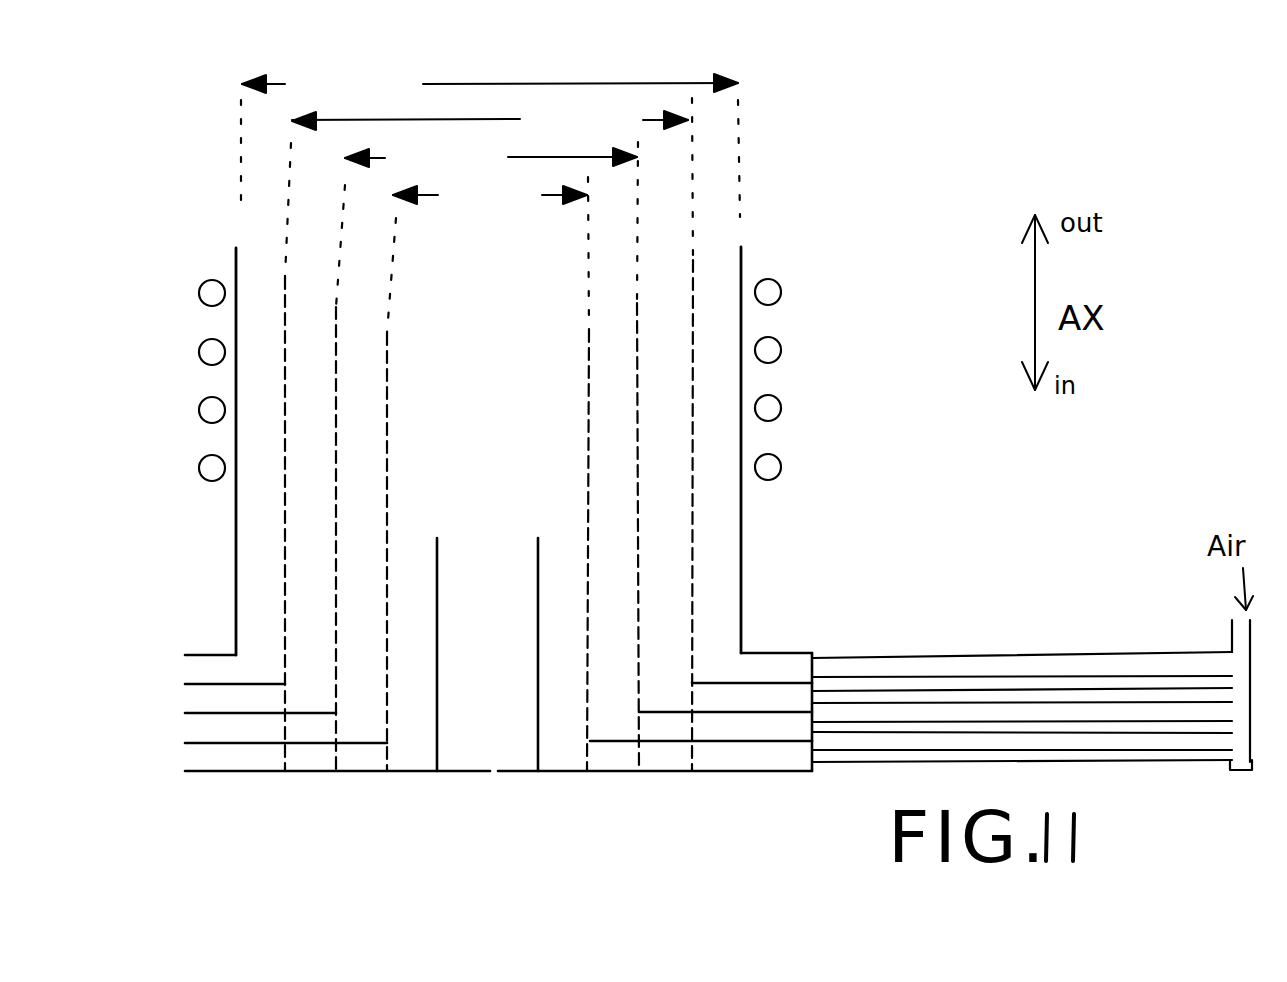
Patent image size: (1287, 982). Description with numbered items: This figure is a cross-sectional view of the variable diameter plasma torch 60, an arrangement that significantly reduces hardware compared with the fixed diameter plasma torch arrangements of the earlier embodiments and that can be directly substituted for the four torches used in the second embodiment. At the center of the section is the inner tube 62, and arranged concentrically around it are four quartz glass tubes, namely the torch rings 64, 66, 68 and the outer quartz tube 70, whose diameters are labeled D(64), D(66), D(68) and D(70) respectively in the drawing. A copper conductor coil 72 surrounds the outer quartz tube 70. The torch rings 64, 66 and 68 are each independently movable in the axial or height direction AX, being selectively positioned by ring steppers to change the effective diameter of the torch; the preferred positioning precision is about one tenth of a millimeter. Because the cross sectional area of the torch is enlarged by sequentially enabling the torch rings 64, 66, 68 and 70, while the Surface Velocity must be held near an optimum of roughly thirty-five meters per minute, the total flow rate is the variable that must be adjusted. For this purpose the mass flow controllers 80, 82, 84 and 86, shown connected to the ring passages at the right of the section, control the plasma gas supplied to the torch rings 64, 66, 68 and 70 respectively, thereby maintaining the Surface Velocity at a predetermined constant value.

The variable diameter plasma torch 60 is at (853, 160).
The inner tube 62 is at (542, 637).
The quartz glass tube 64 is at (592, 567).
The quartz glass tube 66 is at (640, 515).
The quartz glass tube 68 is at (698, 438).
The outer quartz tube 70 is at (742, 382).
The copper conductor coil 72 is at (200, 294).
The mass flow controller 80 is at (1022, 758).
The mass flow controller 82 is at (1022, 728).
The mass flow controller 84 is at (1022, 697).
The mass flow controller 86 is at (1022, 656).